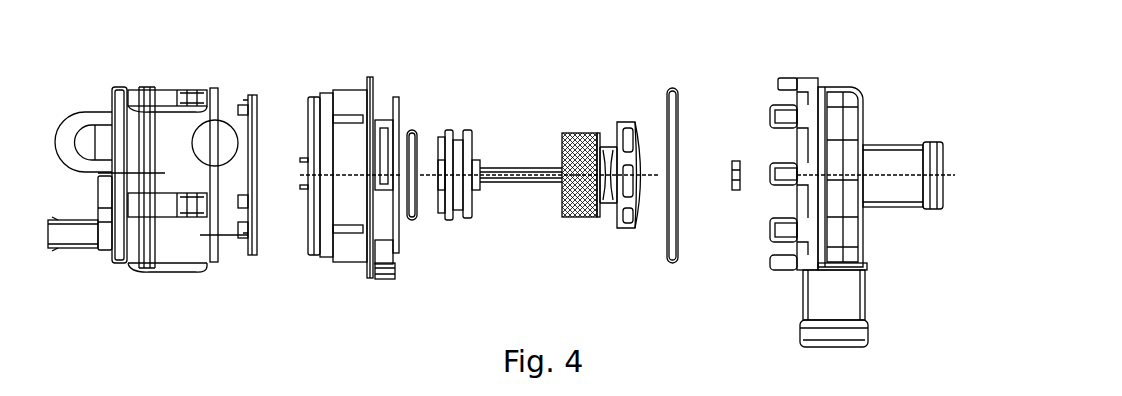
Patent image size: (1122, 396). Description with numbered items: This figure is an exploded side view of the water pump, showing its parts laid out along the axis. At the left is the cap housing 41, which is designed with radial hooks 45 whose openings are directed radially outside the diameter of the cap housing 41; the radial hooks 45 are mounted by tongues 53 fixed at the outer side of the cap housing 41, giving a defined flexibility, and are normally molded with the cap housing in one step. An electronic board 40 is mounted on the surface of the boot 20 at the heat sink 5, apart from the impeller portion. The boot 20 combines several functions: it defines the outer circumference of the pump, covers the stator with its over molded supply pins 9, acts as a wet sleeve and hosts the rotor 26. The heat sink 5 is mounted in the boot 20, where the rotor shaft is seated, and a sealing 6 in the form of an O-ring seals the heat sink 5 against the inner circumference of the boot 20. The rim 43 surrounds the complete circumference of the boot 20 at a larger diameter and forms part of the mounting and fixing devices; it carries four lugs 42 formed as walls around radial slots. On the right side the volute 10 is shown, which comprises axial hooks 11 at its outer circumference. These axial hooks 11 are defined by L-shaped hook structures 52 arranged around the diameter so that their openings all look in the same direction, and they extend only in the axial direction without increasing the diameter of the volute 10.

The heat sink 5 is at (473, 155).
The sealing 6 is at (412, 153).
The supply pins 9 is at (305, 122).
The volute 10 is at (805, 177).
The axial hooks 11 is at (783, 273).
The boot 20 is at (368, 87).
The rotor 26 is at (589, 175).
The electronic board 40 is at (250, 241).
The cap housing 41 is at (124, 88).
The lugs 42 is at (387, 278).
The rim 43 is at (368, 264).
The radial hooks 45 is at (183, 90).
The hook structures 52 is at (780, 122).
The tongues 53 is at (168, 271).